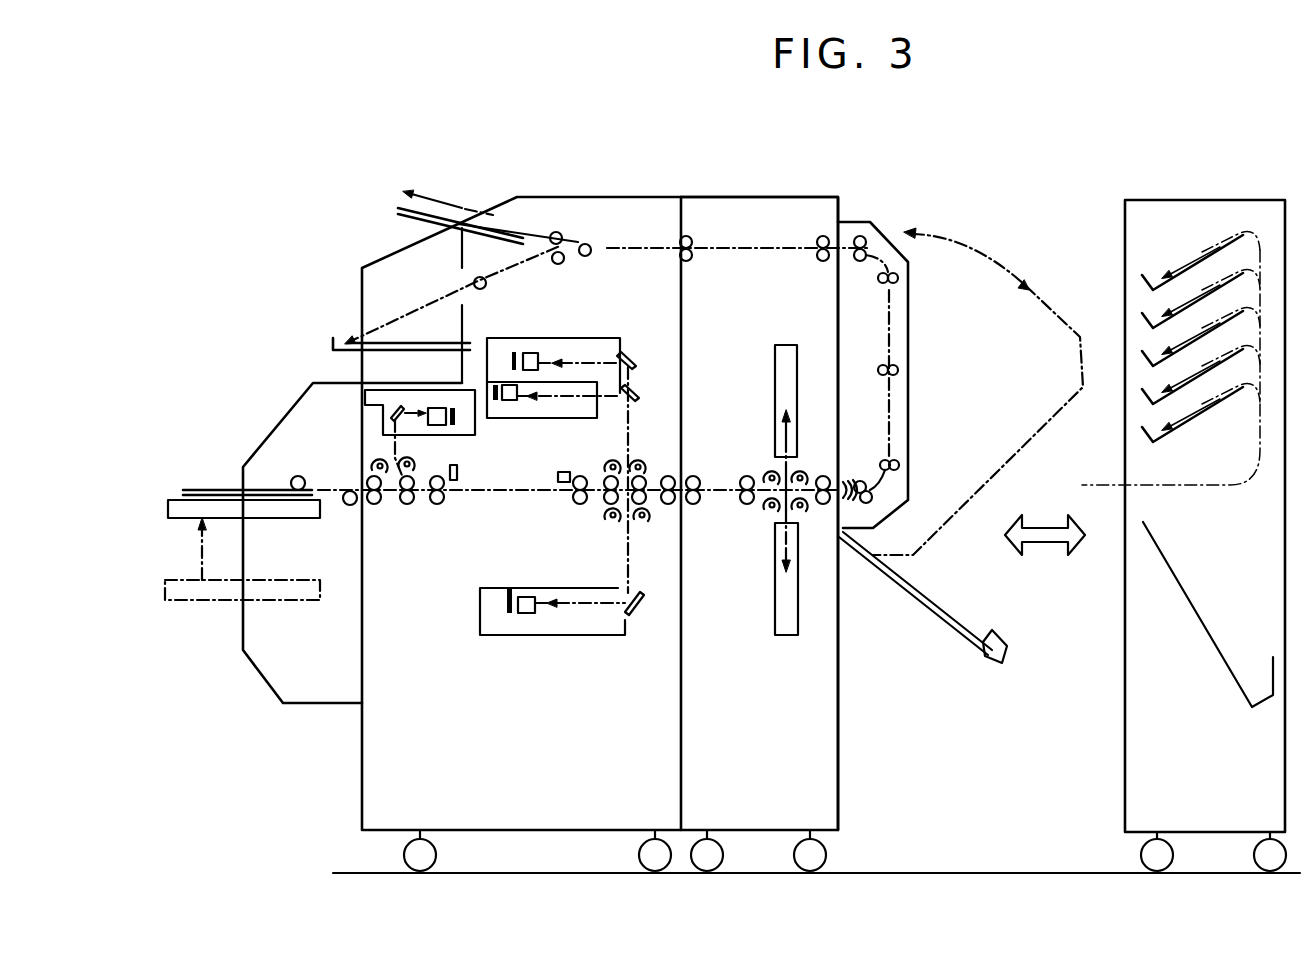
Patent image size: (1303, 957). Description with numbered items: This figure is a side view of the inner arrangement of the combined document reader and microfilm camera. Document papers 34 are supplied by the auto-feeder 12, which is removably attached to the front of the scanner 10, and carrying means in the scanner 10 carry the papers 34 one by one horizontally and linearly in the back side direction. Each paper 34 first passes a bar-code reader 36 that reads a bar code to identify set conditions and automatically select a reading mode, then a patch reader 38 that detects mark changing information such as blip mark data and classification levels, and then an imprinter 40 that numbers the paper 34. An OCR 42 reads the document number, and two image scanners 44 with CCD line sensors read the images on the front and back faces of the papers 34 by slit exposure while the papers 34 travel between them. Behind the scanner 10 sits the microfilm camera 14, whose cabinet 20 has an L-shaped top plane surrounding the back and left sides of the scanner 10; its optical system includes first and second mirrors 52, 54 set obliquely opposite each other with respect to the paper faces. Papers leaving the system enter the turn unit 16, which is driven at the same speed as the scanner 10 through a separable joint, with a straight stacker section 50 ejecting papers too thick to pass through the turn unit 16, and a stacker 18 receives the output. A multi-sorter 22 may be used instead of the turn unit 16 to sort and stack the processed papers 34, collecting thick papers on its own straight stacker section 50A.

The scanner 10 is at (610, 198).
The auto-feeder 12 is at (285, 413).
The microfilm camera 14 is at (800, 194).
The turn unit 16 is at (878, 237).
The stacker 18 is at (406, 267).
The cabinet 20 is at (720, 198).
The multi-sorter 22 is at (1197, 198).
The document paper 34 is at (387, 343).
The bar-code reader 36 is at (362, 417).
The patch reader 38 is at (458, 490).
The imprinter 40 is at (552, 482).
The OCR 42 is at (527, 418).
The image scanner 44 is at (600, 337).
The straight stacker section 50 is at (948, 622).
The straight stacker section 50A is at (1207, 630).
The first mirror 52 is at (777, 360).
The second mirror 54 is at (773, 620).